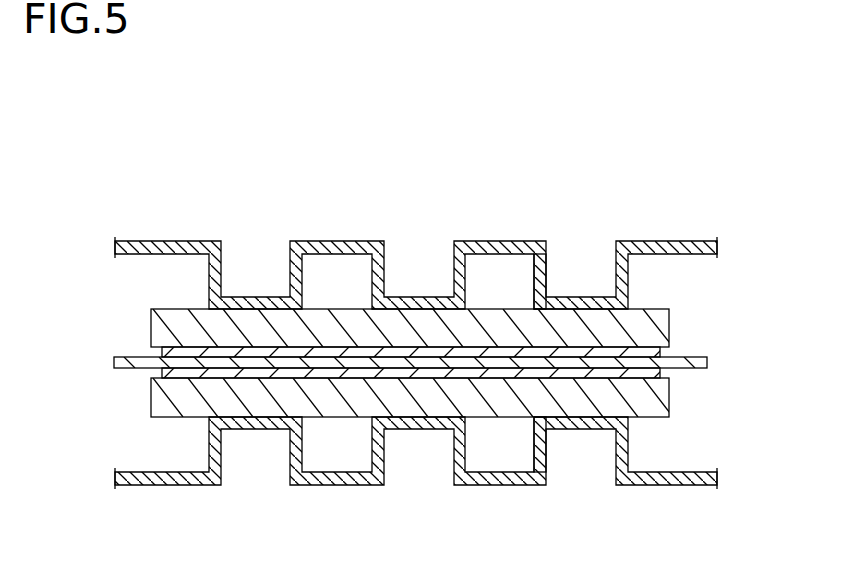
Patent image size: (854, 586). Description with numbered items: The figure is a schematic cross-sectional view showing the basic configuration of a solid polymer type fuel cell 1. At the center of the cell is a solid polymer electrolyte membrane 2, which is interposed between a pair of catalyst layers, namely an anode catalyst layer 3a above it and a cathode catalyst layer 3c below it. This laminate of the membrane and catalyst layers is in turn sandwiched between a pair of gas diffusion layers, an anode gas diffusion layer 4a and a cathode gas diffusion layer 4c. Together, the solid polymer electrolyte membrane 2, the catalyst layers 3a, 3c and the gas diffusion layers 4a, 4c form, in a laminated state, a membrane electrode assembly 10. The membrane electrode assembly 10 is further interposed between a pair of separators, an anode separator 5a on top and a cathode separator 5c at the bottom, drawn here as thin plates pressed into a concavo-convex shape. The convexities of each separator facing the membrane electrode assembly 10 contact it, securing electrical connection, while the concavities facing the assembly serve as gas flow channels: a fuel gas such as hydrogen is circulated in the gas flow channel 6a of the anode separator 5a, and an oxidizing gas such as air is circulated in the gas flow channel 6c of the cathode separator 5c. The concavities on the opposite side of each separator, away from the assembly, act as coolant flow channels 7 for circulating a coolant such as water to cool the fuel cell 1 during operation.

The solid polymer type fuel cell 1 is at (113, 151).
The solid polymer electrolyte membrane 2 is at (708, 362).
The anode catalyst layer 3a is at (660, 352).
The cathode catalyst layer 3c is at (660, 372).
The anode gas diffusion layer 4a is at (670, 315).
The cathode gas diffusion layer 4c is at (670, 408).
The anode separator 5a is at (627, 273).
The cathode separator 5c is at (628, 448).
The gas flow channel 6a is at (474, 272).
The gas flow channel 6c is at (473, 453).
The coolant flow channel 7 is at (551, 272).
The membrane electrode assembly 10 is at (459, 363).